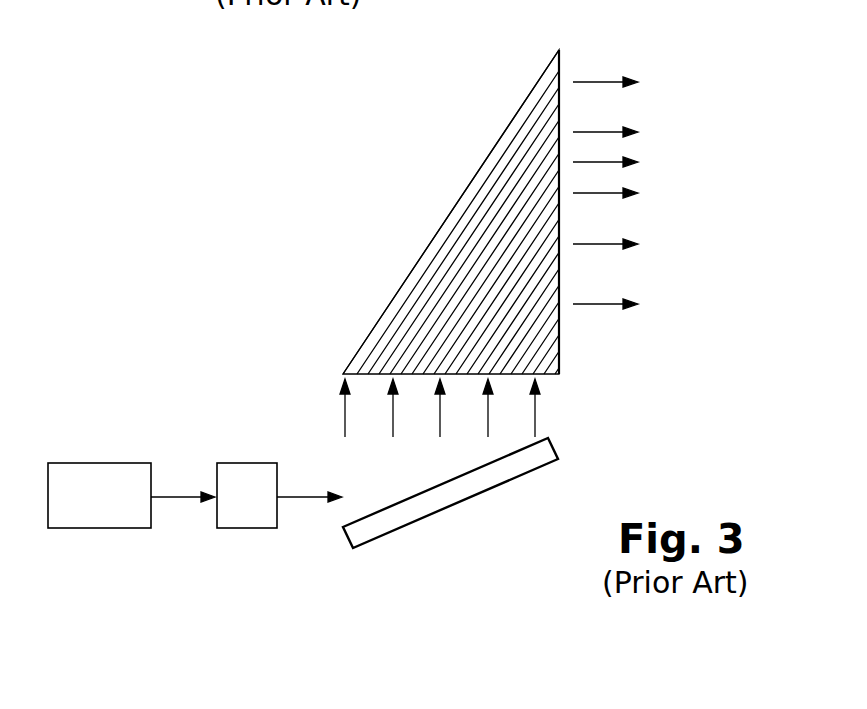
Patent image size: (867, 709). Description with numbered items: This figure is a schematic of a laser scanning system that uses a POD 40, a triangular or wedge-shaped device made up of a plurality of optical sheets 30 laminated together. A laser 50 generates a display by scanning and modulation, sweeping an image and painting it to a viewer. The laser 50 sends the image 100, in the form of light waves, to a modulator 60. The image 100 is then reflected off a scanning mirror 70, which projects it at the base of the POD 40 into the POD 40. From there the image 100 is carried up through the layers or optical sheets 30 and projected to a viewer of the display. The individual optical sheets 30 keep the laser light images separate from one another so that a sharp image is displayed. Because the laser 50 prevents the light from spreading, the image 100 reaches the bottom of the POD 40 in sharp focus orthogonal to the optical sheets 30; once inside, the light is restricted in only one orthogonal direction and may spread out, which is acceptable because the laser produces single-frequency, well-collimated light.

The optical sheets 30 is at (558, 58).
The POD 40 is at (383, 315).
The laser 50 is at (103, 463).
The modulator 60 is at (233, 463).
The scanning mirror 70 is at (525, 483).
The image 100 is at (685, 155).